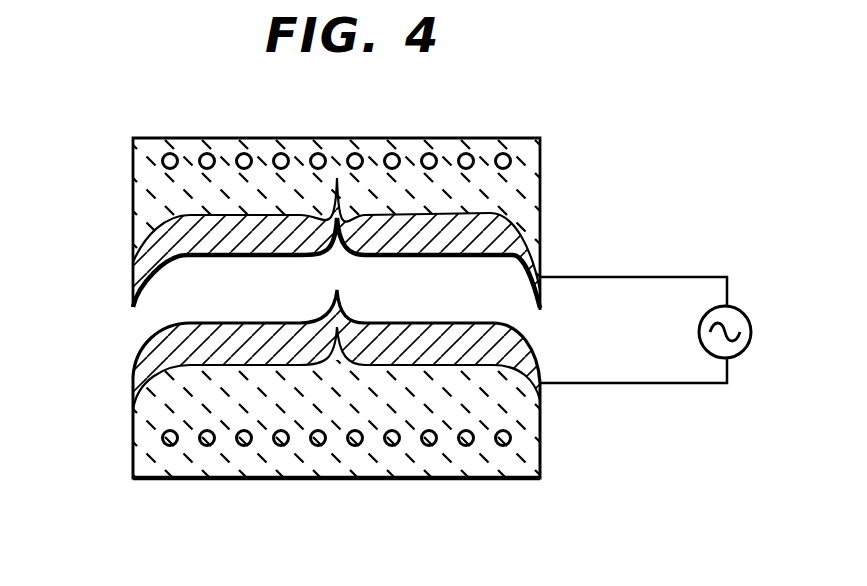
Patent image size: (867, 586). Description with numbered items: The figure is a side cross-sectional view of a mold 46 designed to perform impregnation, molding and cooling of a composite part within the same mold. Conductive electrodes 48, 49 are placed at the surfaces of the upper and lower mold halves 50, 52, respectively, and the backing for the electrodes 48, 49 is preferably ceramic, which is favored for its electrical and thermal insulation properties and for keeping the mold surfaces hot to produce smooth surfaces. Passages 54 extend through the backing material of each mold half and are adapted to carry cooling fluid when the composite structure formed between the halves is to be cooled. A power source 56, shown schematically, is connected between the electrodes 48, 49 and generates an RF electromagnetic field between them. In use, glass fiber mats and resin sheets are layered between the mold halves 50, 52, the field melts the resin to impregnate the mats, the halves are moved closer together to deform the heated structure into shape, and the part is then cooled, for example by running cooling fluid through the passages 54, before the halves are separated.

The mold 46 is at (119, 173).
The conductive electrode 48 is at (140, 272).
The conductive electrode 49 is at (143, 372).
The upper mold half 50 is at (150, 138).
The lower mold half 52 is at (192, 478).
The passages 54 is at (503, 154).
The power source 56 is at (745, 315).